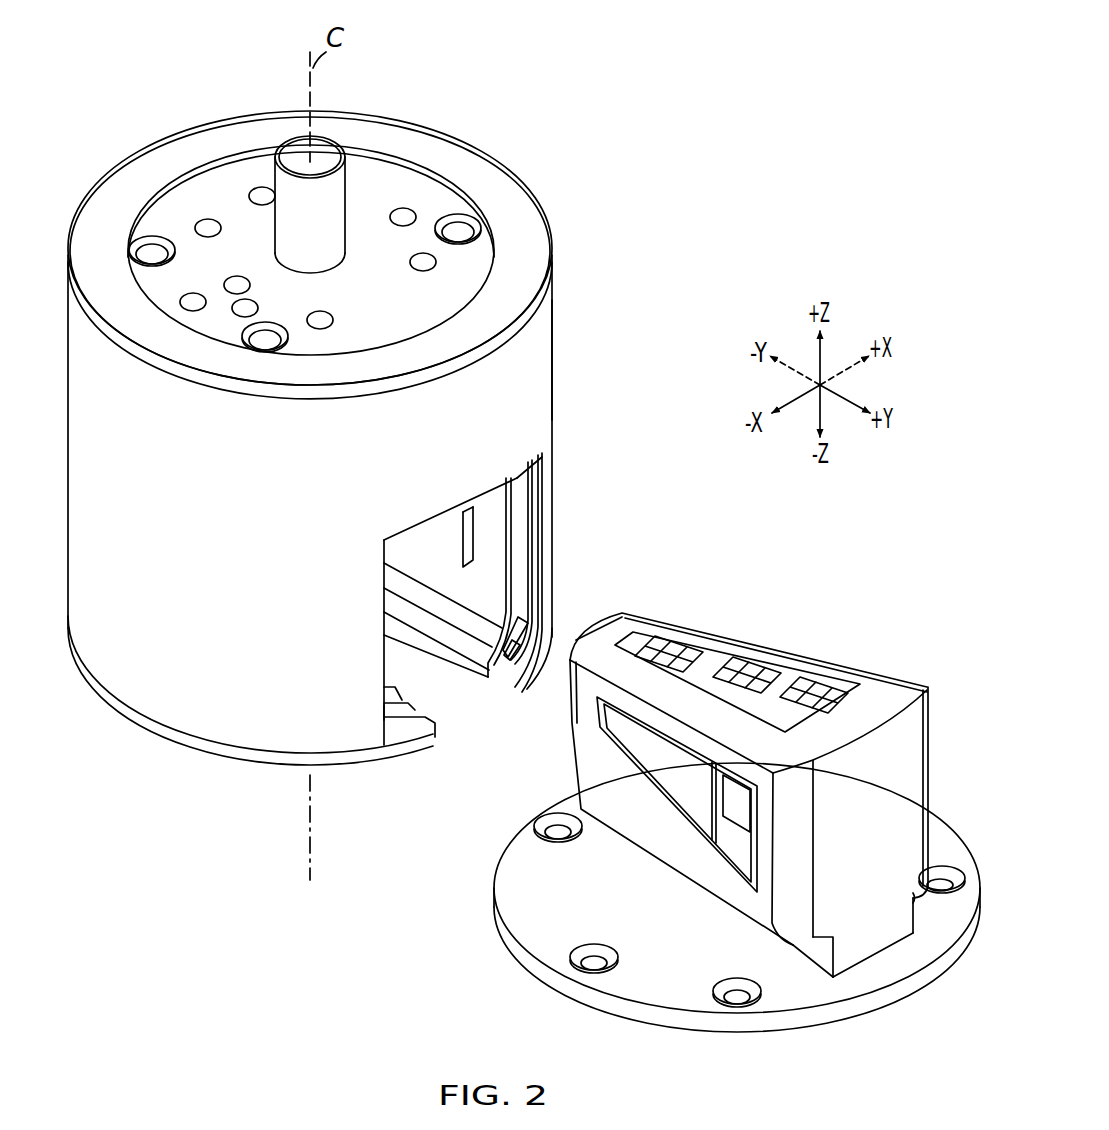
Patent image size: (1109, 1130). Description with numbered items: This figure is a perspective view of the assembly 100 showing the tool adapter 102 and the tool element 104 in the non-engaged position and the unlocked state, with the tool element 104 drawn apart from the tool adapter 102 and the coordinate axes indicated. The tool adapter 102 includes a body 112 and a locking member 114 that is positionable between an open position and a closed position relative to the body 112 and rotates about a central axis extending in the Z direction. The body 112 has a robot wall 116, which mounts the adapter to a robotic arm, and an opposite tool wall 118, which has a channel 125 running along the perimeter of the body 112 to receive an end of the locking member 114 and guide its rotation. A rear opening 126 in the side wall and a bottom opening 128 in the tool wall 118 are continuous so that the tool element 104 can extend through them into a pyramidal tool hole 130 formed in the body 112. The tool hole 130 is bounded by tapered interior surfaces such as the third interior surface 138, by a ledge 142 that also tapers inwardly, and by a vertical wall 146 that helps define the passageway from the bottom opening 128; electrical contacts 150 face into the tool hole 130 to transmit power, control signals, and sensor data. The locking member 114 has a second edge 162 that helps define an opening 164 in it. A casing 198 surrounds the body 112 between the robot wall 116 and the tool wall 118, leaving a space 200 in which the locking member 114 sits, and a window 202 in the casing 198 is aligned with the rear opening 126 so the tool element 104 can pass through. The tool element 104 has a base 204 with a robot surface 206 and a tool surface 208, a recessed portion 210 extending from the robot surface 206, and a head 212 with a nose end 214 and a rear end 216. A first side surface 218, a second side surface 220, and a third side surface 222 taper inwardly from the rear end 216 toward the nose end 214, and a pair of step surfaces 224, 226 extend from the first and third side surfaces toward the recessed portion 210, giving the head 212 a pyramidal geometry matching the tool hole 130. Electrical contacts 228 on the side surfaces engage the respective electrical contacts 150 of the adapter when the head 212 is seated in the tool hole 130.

The electric motor system 100 is at (770, 104).
The tool adapter 102 is at (552, 167).
The tool element 104 is at (800, 615).
The body 112 is at (500, 535).
The locking member 114 is at (522, 476).
The robot wall 116 is at (479, 167).
The tool wall 118 is at (428, 667).
The channel 125 is at (507, 667).
The rear opening 126 is at (398, 668).
The bottom opening 128 is at (452, 708).
The tool hole 130 is at (395, 605).
The third interior surface 138 is at (497, 508).
The ledge 142 is at (400, 560).
The vertical wall 146 is at (395, 625).
The electrical contacts 150 is at (445, 532).
The second edge 162 is at (518, 498).
The opening 164 is at (514, 580).
The casing 198 is at (548, 371).
The space 200 is at (510, 668).
The window 202 is at (537, 560).
The base 204 is at (522, 866).
The robot surface 206 is at (662, 990).
The tool surface 208 is at (782, 1035).
The recessed portion 210 is at (638, 825).
The head 212 is at (722, 613).
The nose end 214 is at (612, 620).
The rear end 216 is at (915, 753).
The first side surface 218 is at (757, 900).
The second side surface 220 is at (888, 690).
The third side surface 222 is at (930, 727).
The step surface 224 is at (822, 950).
The step surface 226 is at (912, 893).
The electrical contacts 228 is at (757, 666).